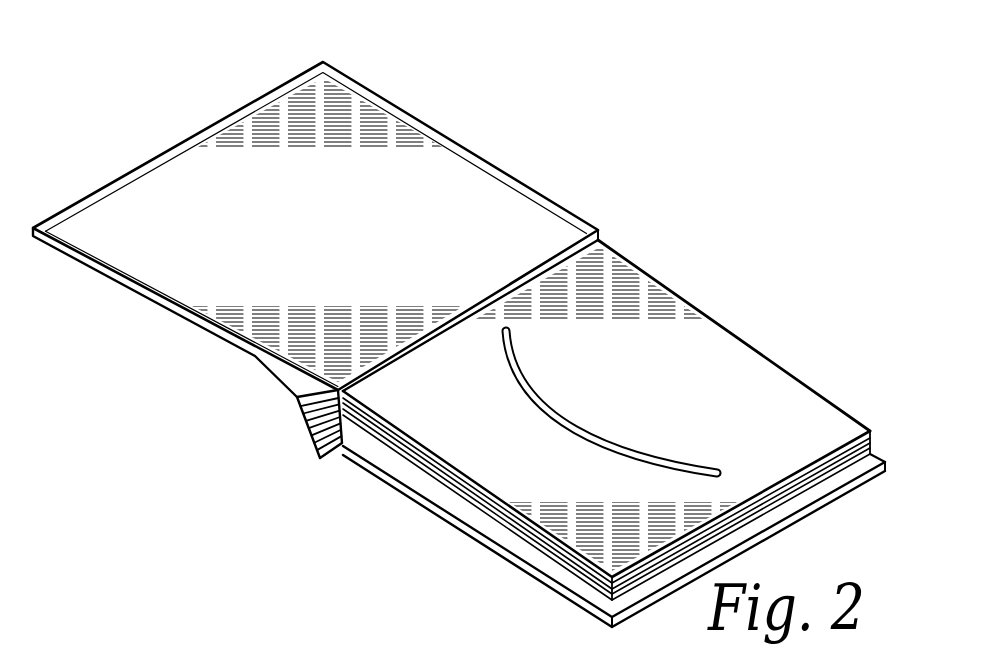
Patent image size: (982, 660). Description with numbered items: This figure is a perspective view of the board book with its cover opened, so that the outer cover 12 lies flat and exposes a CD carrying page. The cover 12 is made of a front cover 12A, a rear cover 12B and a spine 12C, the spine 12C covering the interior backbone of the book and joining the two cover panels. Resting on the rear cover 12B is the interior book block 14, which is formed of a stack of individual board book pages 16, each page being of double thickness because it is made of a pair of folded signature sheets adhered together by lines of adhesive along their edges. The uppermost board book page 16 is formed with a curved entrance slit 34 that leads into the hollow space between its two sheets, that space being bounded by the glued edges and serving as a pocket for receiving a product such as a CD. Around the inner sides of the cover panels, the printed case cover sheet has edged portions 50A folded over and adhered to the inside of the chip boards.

The outer cover 12 is at (459, 336).
The front cover 12A is at (143, 163).
The rear cover 12B is at (462, 528).
The spine 12C is at (307, 432).
The book block 14 is at (623, 420).
The board book pages 16 is at (800, 415).
The entrance slit 34 is at (550, 407).
The edged portions of case cover sheet 50A is at (263, 107).